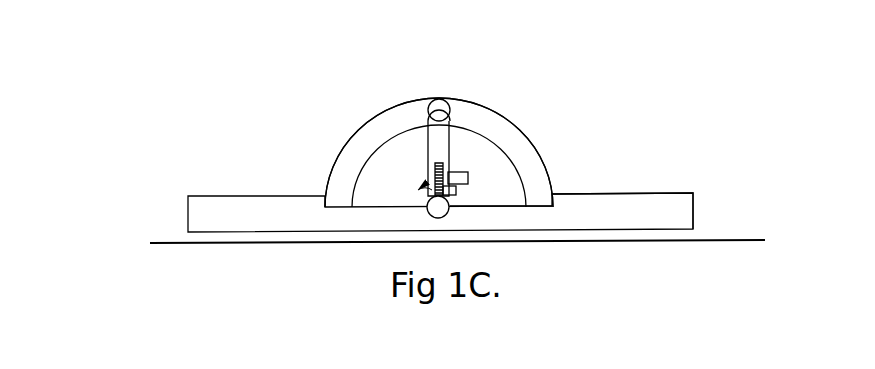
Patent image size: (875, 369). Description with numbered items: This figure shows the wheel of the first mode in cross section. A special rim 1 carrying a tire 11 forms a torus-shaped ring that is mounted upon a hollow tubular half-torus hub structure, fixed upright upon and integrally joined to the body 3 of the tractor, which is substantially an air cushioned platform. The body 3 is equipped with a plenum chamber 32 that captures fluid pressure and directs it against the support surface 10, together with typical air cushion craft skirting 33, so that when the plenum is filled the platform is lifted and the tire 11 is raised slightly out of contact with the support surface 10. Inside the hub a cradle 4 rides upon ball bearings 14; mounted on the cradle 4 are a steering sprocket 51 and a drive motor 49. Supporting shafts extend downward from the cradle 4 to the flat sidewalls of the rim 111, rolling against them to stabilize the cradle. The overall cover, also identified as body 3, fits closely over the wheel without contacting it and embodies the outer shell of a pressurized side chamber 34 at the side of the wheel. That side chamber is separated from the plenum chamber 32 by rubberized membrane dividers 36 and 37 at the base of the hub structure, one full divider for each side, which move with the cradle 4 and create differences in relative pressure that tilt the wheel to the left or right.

The rim 1 is at (439, 108).
The body 3 is at (388, 104).
The cradle 4 is at (468, 183).
The support surface 10 is at (157, 240).
The tire 11 is at (437, 103).
The ball bearings 14 is at (467, 192).
The plenum chamber 32 is at (277, 207).
The air cushion craft skirting 33 is at (697, 205).
The pressurized side chamber 34 is at (355, 140).
The rubberized membrane divider 36 is at (342, 207).
The rubberized membrane divider 37 is at (535, 206).
The drive motor 49 is at (468, 167).
The steering sprocket 51 is at (450, 155).
The flat sidewalls of the rim 111 is at (457, 105).